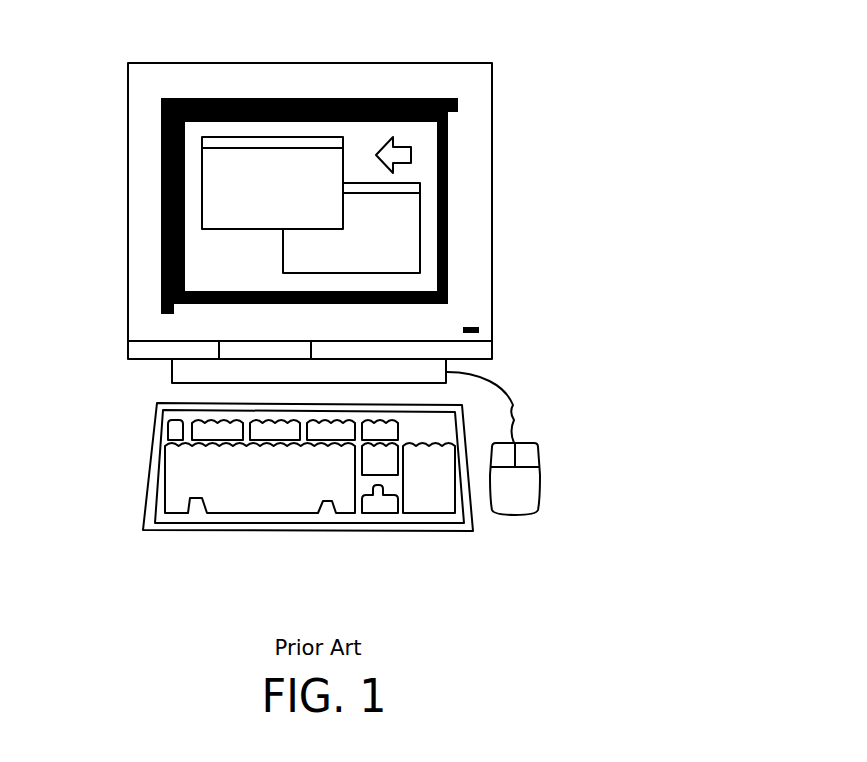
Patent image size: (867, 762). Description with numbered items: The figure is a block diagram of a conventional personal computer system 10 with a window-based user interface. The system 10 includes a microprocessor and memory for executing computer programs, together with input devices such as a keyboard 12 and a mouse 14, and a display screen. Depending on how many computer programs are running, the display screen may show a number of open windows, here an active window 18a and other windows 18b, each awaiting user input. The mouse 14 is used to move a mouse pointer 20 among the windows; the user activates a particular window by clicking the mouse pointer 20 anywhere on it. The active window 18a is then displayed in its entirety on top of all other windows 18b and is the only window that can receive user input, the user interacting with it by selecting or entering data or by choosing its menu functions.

The personal computer system 10 is at (290, 22).
The keyboard 12 is at (257, 467).
The mouse 14 is at (570, 429).
The active window 18a is at (202, 177).
The other windows 18b is at (423, 228).
The mouse pointer 20 is at (465, 137).